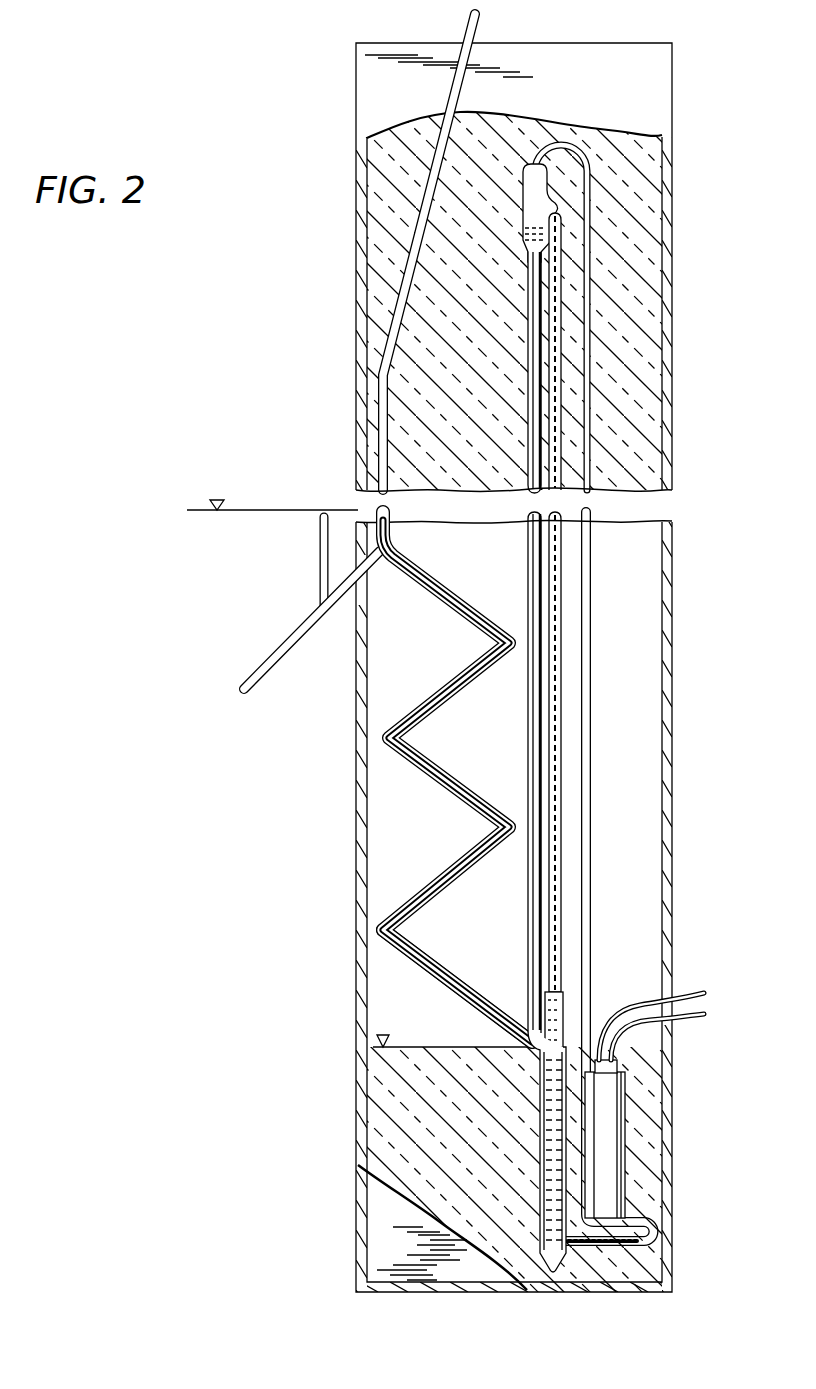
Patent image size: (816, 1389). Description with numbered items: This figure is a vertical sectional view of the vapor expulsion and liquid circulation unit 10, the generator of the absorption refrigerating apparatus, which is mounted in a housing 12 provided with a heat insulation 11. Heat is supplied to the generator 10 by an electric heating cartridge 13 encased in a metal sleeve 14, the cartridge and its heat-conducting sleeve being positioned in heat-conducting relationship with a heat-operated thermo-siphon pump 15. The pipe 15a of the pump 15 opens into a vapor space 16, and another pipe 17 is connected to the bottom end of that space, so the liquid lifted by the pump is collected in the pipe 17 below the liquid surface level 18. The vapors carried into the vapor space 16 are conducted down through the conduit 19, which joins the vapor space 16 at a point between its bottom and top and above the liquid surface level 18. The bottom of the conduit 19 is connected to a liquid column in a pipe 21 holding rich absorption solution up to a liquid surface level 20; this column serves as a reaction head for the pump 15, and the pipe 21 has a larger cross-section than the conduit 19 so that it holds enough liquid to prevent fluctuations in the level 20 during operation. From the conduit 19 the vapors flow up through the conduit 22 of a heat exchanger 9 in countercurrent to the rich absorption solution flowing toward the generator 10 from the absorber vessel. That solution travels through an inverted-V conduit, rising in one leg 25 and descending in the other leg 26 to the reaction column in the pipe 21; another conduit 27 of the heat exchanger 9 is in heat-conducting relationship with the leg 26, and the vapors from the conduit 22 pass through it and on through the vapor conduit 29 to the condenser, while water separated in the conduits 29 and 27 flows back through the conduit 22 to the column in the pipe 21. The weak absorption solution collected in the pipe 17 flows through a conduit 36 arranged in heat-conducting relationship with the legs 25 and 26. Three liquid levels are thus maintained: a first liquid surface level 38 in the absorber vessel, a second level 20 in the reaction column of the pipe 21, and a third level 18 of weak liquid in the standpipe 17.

The heat exchanger 9 is at (442, 737).
The vapor expulsion and liquid circulation unit 10 is at (598, 457).
The heat insulation 11 is at (648, 240).
The housing 12 is at (673, 207).
The electric heating cartridge 13 is at (618, 1065).
The metal sleeve 14 is at (611, 1165).
The thermo-siphon pump 15 is at (592, 961).
The pipe of the pump 15a is at (591, 151).
The vapor space 16 is at (522, 200).
The pipe 17 is at (530, 338).
The liquid surface level 18 is at (522, 223).
The conduit 19 is at (557, 397).
The liquid surface level 20 is at (377, 1033).
The pipe 21 is at (543, 1232).
The conduit 22 is at (480, 993).
The conduit leg 25 is at (276, 650).
The conduit leg 26 is at (448, 590).
The conduit 27 is at (449, 579).
The vapor conduit 29 is at (468, 30).
The conduit 36 is at (387, 740).
The liquid surface level 38 is at (272, 496).